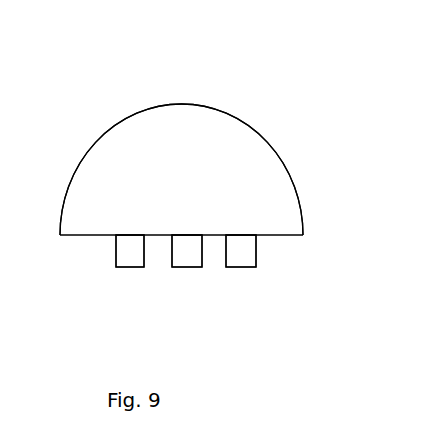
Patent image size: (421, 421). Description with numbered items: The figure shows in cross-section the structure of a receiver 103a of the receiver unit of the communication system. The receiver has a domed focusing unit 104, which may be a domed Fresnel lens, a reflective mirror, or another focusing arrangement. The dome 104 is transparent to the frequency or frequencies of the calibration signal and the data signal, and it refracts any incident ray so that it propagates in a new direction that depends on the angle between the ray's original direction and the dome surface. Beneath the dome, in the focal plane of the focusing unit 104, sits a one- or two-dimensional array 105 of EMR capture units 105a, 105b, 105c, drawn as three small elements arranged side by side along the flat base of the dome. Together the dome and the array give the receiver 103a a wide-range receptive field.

The receiver 103a is at (95, 66).
The domed focusing unit 104 is at (270, 145).
The array of EMR capture units 105 is at (70, 274).
The EMR capture unit 105a is at (129, 255).
The EMR capture unit 105b is at (192, 253).
The EMR capture unit 105c is at (255, 267).